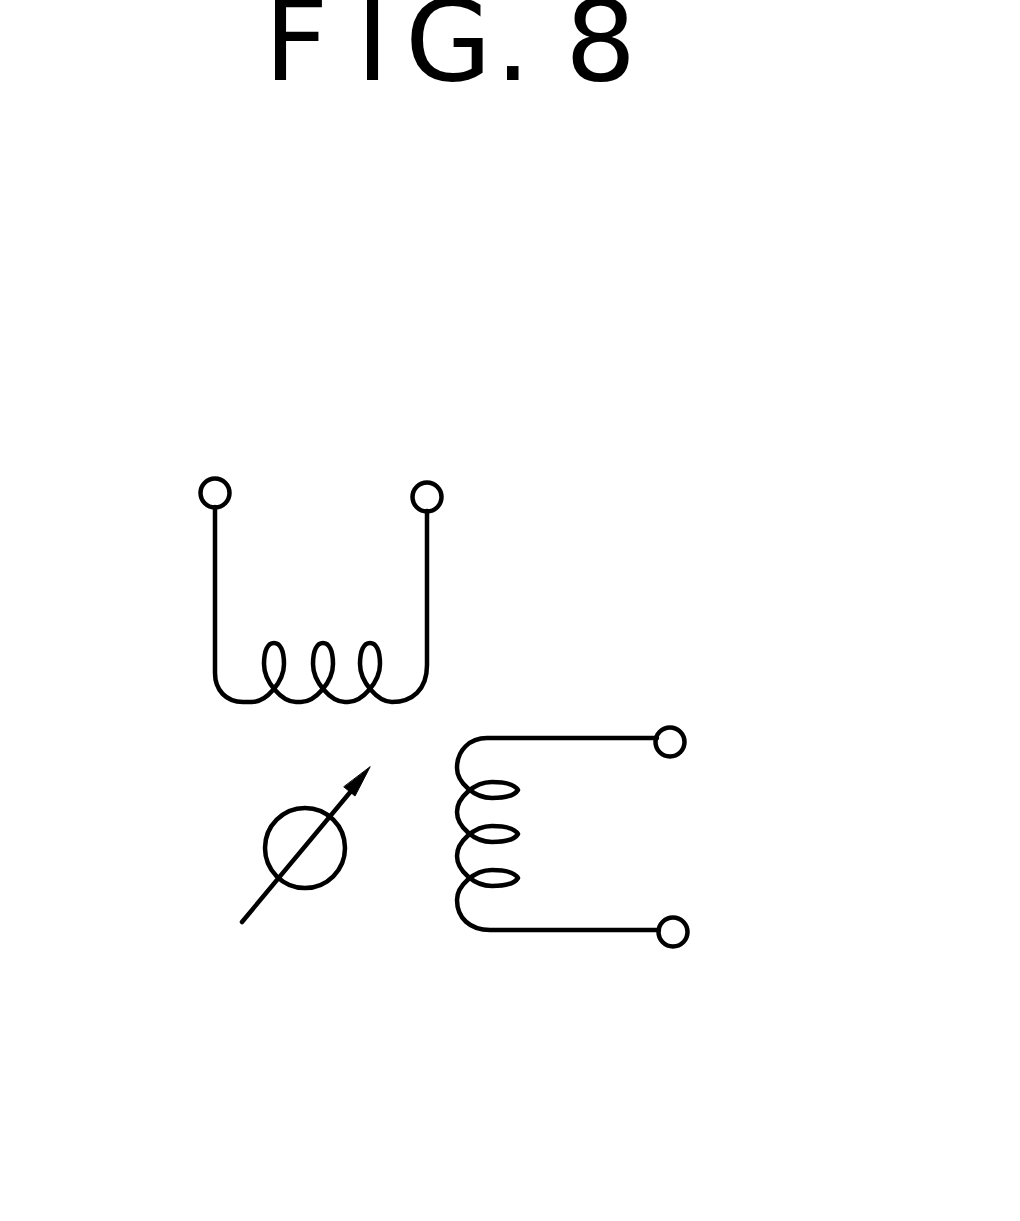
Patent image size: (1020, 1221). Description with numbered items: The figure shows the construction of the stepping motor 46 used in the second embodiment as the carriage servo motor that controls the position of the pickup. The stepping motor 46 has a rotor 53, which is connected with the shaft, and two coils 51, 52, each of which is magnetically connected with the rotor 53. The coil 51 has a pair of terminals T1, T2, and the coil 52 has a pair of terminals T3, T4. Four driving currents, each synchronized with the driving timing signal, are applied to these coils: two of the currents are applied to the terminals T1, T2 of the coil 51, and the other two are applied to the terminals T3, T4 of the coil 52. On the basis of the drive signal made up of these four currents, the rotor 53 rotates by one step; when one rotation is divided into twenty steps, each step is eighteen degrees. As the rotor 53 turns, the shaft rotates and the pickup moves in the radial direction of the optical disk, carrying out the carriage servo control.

The stepping motor 46 is at (373, 425).
The coil 51 is at (427, 563).
The coil 52 is at (595, 932).
The rotor 53 is at (263, 848).
The terminal T1 is at (206, 481).
The terminal T2 is at (437, 484).
The terminal T3 is at (685, 742).
The terminal T4 is at (688, 931).